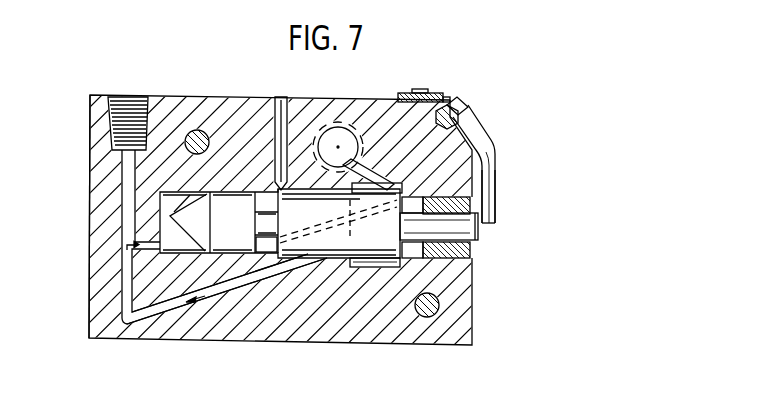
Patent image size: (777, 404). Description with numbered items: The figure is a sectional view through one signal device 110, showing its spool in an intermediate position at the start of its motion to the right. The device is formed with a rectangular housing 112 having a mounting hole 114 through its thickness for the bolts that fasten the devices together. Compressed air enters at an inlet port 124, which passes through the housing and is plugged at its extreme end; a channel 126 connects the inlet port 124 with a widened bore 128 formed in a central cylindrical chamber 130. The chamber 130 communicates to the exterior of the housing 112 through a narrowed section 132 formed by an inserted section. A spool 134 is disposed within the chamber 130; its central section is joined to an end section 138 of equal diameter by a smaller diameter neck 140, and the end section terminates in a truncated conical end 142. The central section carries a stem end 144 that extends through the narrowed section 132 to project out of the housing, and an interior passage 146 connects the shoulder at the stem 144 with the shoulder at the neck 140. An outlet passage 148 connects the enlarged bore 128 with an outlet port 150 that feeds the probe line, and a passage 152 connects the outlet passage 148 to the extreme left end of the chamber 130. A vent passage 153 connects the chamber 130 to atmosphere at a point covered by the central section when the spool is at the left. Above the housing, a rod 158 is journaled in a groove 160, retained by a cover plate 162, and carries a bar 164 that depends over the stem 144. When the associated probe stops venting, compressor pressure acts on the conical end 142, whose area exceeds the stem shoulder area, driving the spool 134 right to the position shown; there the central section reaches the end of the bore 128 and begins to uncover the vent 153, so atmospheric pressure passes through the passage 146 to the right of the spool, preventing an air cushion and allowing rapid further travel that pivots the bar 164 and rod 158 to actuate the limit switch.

The signal device 110 is at (412, 352).
The housing 112 is at (90, 167).
The mounting hole 114 is at (197, 130).
The inlet port 124 is at (343, 142).
The channel 126 is at (368, 170).
The widened bore 128 is at (390, 262).
The central cylindrical chamber 130 is at (265, 203).
The narrowed section 132 is at (472, 258).
The spool 134 is at (368, 247).
The end section 138 is at (240, 230).
The neck 140 is at (277, 223).
The truncated conical end 142 is at (190, 222).
The stem end 144 is at (478, 232).
The interior passage 146 is at (356, 224).
The outlet passage 148 is at (162, 305).
The outlet port 150 is at (130, 97).
The passage 152 is at (147, 235).
The vent passage 153 is at (285, 118).
The rod 158 is at (470, 110).
The groove 160 is at (437, 119).
The cover plate 162 is at (437, 103).
The bar 164 is at (497, 178).